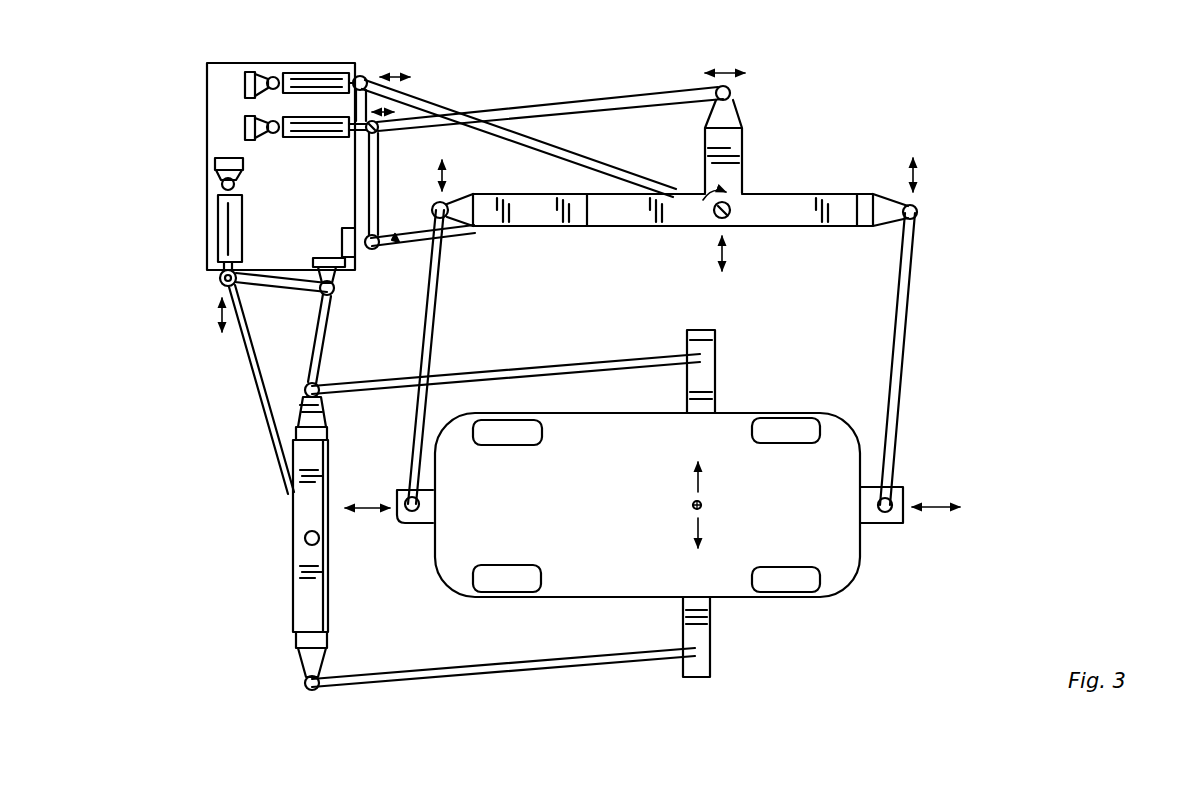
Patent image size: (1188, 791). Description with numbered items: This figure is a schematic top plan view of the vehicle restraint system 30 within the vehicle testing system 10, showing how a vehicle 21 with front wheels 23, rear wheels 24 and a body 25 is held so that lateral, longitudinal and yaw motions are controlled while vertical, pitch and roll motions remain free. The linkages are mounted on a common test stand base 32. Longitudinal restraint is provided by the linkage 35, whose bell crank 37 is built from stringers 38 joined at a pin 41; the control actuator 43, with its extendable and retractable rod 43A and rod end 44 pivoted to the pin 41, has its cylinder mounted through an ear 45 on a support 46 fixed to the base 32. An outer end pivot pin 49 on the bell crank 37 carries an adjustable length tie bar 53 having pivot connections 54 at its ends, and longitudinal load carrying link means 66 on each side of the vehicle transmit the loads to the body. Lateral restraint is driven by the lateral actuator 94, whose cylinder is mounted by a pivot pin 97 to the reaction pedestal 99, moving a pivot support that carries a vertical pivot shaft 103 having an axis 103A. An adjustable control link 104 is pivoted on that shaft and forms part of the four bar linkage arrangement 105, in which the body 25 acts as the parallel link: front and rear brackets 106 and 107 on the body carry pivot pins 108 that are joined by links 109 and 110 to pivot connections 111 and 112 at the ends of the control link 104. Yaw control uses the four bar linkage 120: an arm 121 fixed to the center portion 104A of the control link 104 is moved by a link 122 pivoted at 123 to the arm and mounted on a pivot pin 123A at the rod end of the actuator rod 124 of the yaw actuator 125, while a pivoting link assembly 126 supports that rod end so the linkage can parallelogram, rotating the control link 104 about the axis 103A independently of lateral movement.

The vehicle testing system 10 is at (845, 142).
The vehicle 21 is at (662, 590).
The front wheels 23 is at (756, 445).
The rear wheels 24 is at (541, 443).
The body 25 is at (612, 592).
The vehicle restraint system 30 is at (577, 90).
The test stand base 32 is at (232, 62).
The longitudinal restraint linkage 35 is at (278, 484).
The bell crank 37 is at (250, 382).
The stringers 38 is at (292, 292).
The pin 41 is at (220, 280).
The control actuator 43 is at (231, 222).
The extendable and retractable rod 43A is at (235, 268).
The rod end 44 is at (221, 289).
The ear 45 is at (222, 184).
The support 46 is at (243, 164).
The outer end pivot pin 49 is at (305, 539).
The tie bar 53 is at (307, 595).
The outer end pivot connections 54 is at (306, 384).
The longitudinal load carrying link means 66 is at (555, 366).
The lateral actuator 94 is at (336, 80).
The pivot pin 97 is at (274, 77).
The reaction pedestal 99 is at (245, 85).
The pivot shaft 103 is at (714, 220).
The pivot shaft axis 103A is at (730, 220).
The control link 104 is at (782, 230).
The center portion of control link 104A is at (627, 228).
The four bar linkage arrangement 105 is at (915, 268).
The front bracket 106 is at (875, 524).
The rear bracket 107 is at (426, 522).
The pivot pins 108 is at (406, 500).
The link 109 is at (904, 333).
The link 110 is at (434, 302).
The pivot connection 111 is at (916, 209).
The pivot connection 112 is at (447, 206).
The yaw control four bar linkage 120 is at (516, 100).
The arm 121 is at (726, 154).
The link 122 is at (628, 92).
The pivot 123 is at (731, 93).
The pivot pin 123A is at (379, 131).
The actuator rod 124 is at (352, 138).
The yaw actuator 125 is at (297, 155).
The pivoting link assembly 126 is at (373, 191).